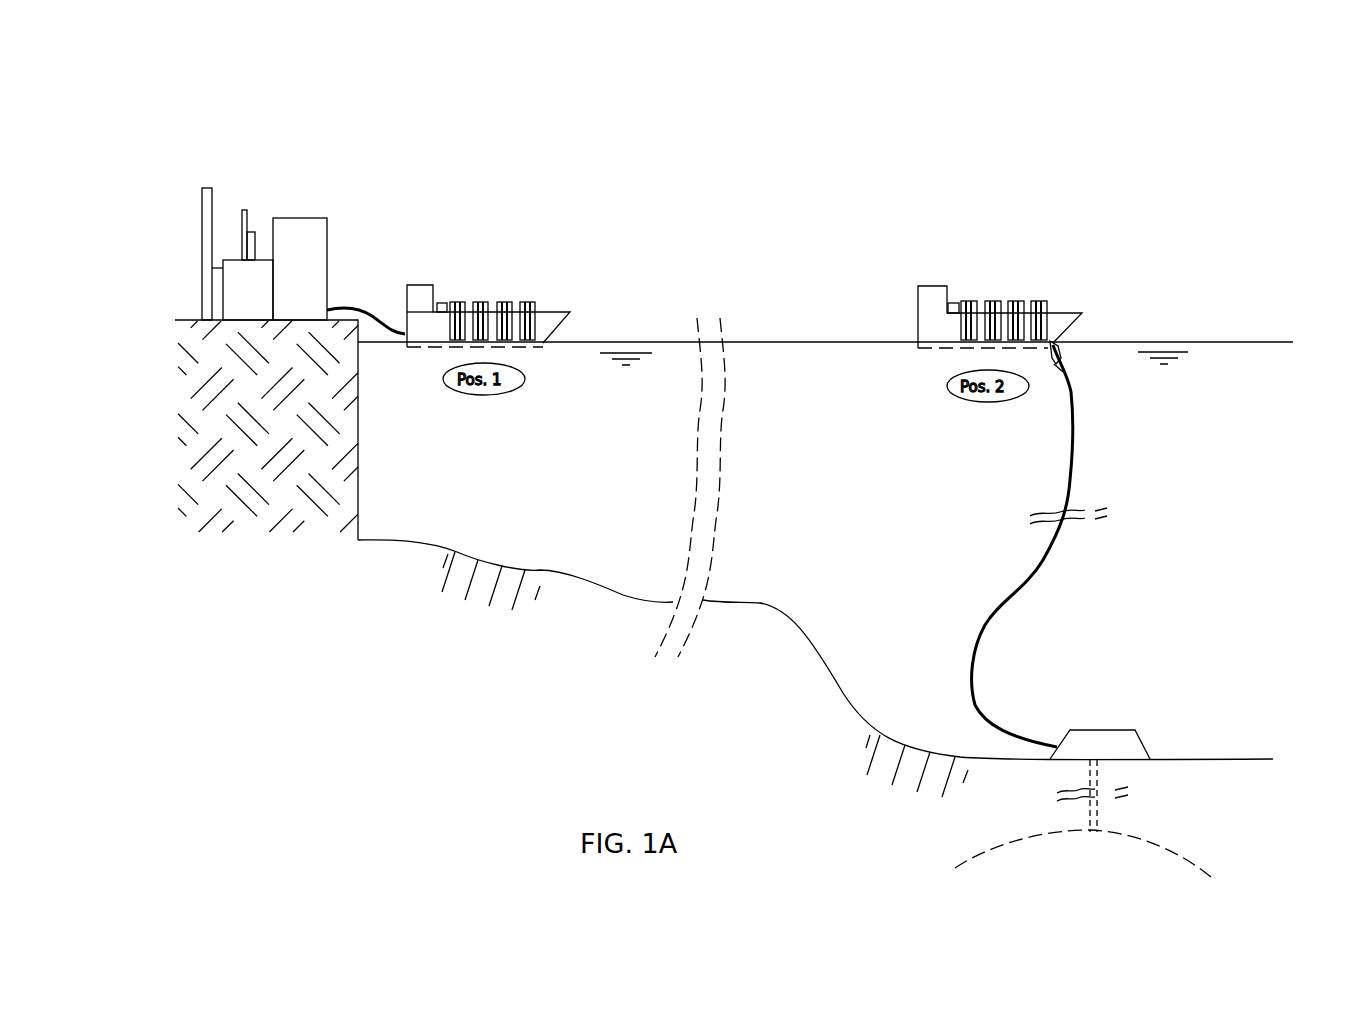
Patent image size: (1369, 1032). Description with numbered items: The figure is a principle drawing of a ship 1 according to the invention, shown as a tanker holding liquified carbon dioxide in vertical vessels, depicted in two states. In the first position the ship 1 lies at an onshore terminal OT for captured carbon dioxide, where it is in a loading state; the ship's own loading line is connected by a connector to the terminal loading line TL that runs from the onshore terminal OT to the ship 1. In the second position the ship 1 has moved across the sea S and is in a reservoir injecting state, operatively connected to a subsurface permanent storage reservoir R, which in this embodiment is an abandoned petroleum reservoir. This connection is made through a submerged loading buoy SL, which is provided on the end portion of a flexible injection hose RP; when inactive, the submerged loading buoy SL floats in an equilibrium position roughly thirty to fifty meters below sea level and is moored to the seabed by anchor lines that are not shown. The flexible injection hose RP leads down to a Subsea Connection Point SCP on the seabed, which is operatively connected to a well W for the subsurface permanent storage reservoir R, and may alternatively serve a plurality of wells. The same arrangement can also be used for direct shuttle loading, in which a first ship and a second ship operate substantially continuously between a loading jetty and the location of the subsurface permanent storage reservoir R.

The ship 1 is at (510, 267).
The onshore terminal OT is at (300, 217).
The terminal loading line TL is at (373, 310).
The sea S is at (1264, 418).
The submerged loading buoy SL is at (1060, 372).
The flexible injection hose RP is at (1043, 560).
The Subsea Connection Point SCP is at (1140, 730).
The well W is at (1097, 778).
The subsurface permanent storage reservoir R is at (1103, 879).